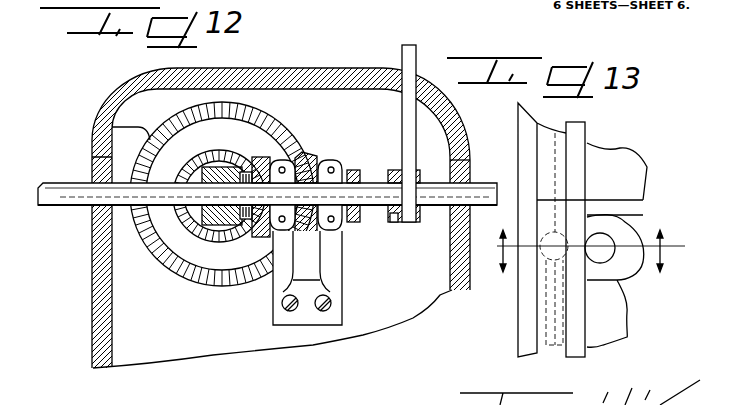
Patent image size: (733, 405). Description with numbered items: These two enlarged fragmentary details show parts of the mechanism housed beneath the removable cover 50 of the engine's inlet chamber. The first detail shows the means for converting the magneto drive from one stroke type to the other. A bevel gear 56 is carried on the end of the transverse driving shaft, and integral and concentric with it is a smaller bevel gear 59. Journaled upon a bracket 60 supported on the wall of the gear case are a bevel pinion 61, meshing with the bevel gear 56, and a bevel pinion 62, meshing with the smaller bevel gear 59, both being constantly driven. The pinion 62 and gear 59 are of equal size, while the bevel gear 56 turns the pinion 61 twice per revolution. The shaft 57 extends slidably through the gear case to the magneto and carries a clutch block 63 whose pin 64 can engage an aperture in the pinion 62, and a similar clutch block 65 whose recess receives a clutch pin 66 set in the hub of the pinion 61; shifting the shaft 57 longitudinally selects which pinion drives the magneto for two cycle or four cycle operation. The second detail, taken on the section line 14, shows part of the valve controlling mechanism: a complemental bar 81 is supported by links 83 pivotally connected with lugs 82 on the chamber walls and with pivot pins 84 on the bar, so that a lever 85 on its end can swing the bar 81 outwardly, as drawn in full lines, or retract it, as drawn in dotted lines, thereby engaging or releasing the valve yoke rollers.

In FIG. 12, the removable cover 50 is at (318, 75).
In FIG. 12, the bevel gear 56 is at (110, 124).
In FIG. 12, the shaft 57 is at (79, 198).
In FIG. 12, the smaller bevel gear 59 is at (242, 140).
In FIG. 12, the bracket 60 is at (335, 268).
In FIG. 12, the bevel pinion 61 is at (329, 288).
In FIG. 12, the bevel pinion 62 is at (256, 228).
In FIG. 12, the clutch block 63 is at (220, 228).
In FIG. 12, the pin 64 is at (271, 152).
In FIG. 12, the clutch block 65 is at (410, 223).
In FIG. 12, the clutch pin 66 is at (363, 222).
In FIG. 12, the lever 85 is at (414, 68).
In FIG. 13, the complemental bar 81 is at (572, 143).
In FIG. 13, the lugs 82 is at (557, 263).
In FIG. 13, the links 83 is at (552, 254).
In FIG. 13, the pivot pins 84 is at (602, 253).
In FIG. 13, the section line 14 is at (591, 251).